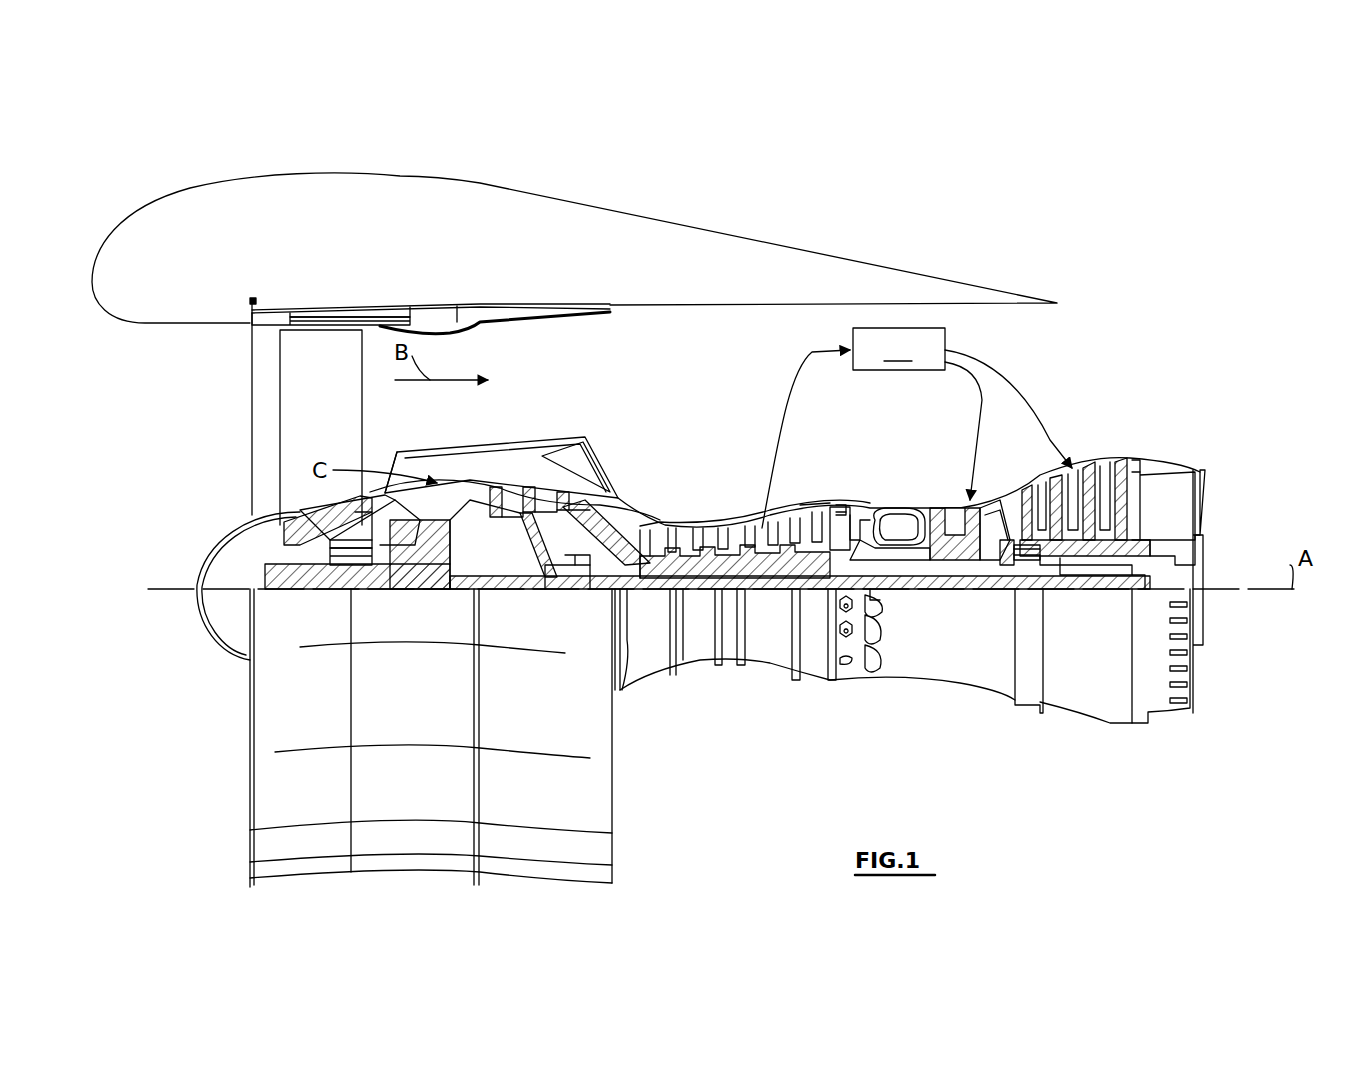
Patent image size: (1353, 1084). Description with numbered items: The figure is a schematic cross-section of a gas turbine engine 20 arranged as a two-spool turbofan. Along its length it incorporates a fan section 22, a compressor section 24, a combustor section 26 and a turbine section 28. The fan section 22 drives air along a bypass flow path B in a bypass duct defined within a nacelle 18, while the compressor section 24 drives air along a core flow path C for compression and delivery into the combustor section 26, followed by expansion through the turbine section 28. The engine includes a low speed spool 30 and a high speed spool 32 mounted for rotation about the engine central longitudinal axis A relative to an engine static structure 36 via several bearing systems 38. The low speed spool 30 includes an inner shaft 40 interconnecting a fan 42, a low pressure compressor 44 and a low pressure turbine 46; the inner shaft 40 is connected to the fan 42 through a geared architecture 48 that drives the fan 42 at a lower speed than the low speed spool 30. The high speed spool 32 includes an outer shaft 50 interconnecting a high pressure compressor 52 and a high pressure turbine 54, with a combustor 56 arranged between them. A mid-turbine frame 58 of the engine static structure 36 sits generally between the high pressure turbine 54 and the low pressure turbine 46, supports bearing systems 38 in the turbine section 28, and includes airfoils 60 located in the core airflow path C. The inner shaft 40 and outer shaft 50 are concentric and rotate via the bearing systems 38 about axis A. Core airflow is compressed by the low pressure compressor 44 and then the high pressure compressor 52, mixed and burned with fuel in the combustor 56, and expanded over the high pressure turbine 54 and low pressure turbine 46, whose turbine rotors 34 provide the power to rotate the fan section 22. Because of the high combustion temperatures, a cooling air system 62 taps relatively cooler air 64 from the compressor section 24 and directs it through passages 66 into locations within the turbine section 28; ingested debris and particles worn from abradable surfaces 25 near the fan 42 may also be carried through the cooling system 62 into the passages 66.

The nacelle 18 is at (568, 217).
The gas turbine engine 20 is at (1020, 183).
The fan section 22 is at (457, 278).
The compressor section 24 is at (872, 425).
The abradable surfaces 25 is at (320, 338).
The combustor section 26 is at (972, 425).
The turbine section 28 is at (1145, 425).
The low speed spool 30 is at (772, 600).
The high speed spool 32 is at (822, 505).
The turbine rotors 34 is at (1095, 565).
The engine static structure 36 is at (810, 680).
The bearing systems 38 is at (330, 575).
The inner shaft 40 is at (640, 600).
The fan 42 is at (334, 432).
The low pressure compressor 44 is at (548, 490).
The low pressure turbine 46 is at (1077, 482).
The geared architecture 48 is at (440, 575).
The outer shaft 50 is at (890, 590).
The high pressure compressor 52 is at (740, 548).
The high pressure turbine 54 is at (960, 508).
The combustor 56 is at (898, 528).
The mid-turbine frame 58 is at (998, 520).
The airfoils 60 is at (1045, 565).
The cooling air system 62 is at (899, 349).
The cooler air 64 is at (812, 358).
The passages 66 is at (995, 390).